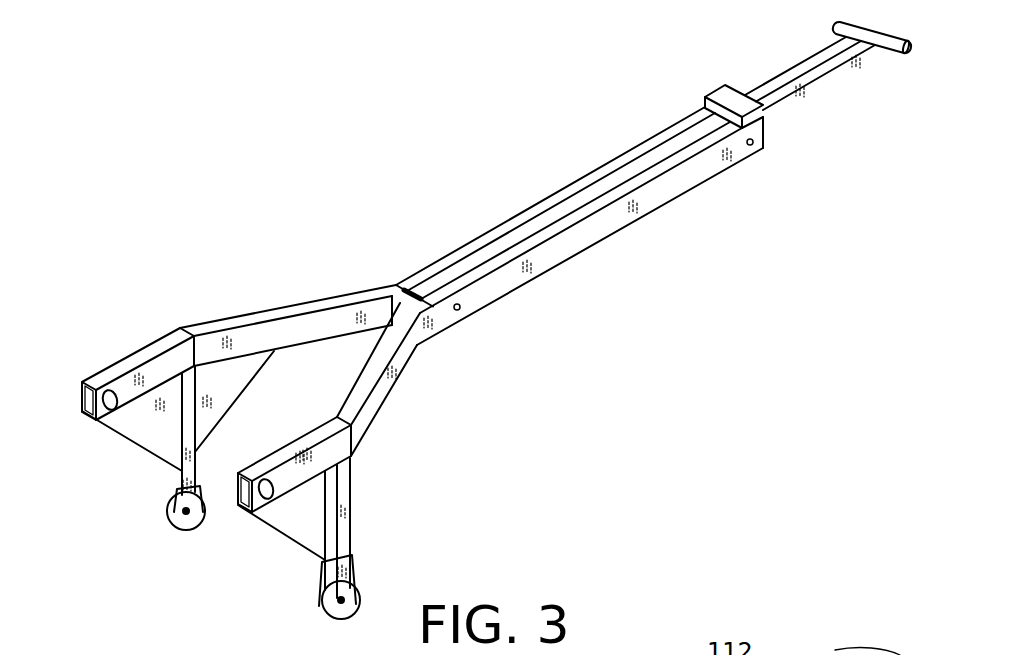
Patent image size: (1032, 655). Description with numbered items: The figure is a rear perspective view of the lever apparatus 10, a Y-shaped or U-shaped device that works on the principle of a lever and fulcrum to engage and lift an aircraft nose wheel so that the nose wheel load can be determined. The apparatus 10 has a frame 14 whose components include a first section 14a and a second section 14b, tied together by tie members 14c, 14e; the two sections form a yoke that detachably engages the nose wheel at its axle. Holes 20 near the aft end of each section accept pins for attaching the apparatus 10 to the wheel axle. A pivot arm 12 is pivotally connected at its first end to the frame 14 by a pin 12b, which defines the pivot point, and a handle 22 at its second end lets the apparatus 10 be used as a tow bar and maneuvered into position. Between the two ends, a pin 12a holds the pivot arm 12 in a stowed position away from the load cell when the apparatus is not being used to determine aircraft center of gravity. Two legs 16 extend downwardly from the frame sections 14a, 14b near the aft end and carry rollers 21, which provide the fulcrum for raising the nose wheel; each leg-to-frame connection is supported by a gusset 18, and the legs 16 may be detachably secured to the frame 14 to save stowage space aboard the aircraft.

The lever apparatus 10 is at (312, 253).
The pivot arm 12 is at (779, 68).
The pin 12a is at (755, 146).
The pin 12b is at (462, 310).
The frame 14 is at (595, 168).
The first section 14a is at (337, 299).
The second section 14b is at (418, 410).
The tie member 14c is at (400, 296).
The tie member 14e is at (706, 97).
The legs 16 is at (170, 490).
The gusset 18 is at (167, 437).
The holes 20 is at (110, 392).
The rollers 21 is at (170, 522).
The handle 22 is at (866, 55).